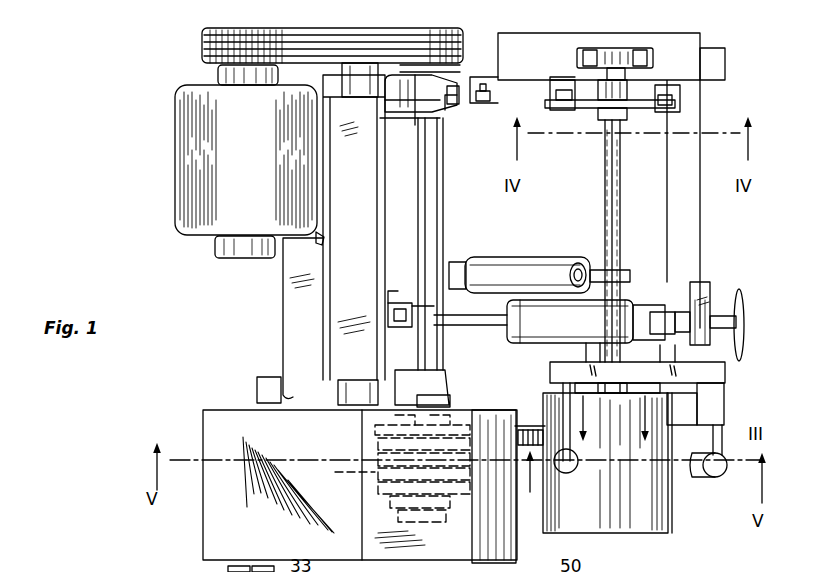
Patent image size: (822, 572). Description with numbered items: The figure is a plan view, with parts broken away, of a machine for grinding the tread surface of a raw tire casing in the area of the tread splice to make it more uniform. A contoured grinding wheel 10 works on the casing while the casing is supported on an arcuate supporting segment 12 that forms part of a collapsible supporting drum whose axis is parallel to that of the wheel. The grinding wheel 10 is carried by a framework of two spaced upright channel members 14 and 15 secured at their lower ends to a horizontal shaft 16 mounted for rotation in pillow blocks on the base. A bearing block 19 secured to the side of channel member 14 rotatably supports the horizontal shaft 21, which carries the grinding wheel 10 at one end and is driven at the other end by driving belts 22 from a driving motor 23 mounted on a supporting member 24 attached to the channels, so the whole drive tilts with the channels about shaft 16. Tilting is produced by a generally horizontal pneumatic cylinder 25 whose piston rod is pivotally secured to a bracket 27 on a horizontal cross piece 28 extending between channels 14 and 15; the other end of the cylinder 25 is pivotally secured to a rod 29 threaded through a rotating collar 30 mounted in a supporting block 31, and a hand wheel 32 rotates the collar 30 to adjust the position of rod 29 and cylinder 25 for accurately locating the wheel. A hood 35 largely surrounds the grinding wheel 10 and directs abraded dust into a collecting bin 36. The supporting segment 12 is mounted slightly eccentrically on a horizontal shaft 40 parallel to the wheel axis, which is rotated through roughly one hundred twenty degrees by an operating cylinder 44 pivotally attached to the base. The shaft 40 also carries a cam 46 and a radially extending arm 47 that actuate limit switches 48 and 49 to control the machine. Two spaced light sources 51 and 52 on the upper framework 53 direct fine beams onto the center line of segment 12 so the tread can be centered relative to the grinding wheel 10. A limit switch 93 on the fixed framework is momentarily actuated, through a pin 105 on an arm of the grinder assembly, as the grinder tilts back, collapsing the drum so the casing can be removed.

The grinding wheel 10 is at (337, 474).
The arcuate supporting segment 12 is at (665, 525).
The upright channel member 14 is at (340, 118).
The upright channel member 15 is at (320, 379).
The horizontal shaft 16 is at (408, 119).
The bearing block 19 is at (434, 99).
The horizontal shaft 21 is at (428, 218).
The driving belts 22 is at (346, 38).
The driving motor 23 is at (200, 135).
The supporting member 24 is at (316, 244).
The pneumatic cylinder 25 is at (615, 310).
The bracket 27 is at (398, 322).
The horizontal cross piece 28 is at (385, 256).
The threaded rod 29 is at (679, 308).
The rotating collar 30 is at (718, 316).
The supporting block 31 is at (704, 291).
The hand wheel 32 is at (741, 331).
The hood 35 is at (368, 534).
The collecting bin 36 is at (210, 519).
The horizontal shaft 40 is at (612, 215).
The operating cylinder 44 is at (526, 260).
The cam 46 is at (642, 105).
The radially extending arm 47 is at (590, 90).
The limit switch 48 is at (670, 95).
The limit switch 49 is at (566, 107).
The light source 51 is at (572, 472).
The light source 52 is at (704, 476).
The upper framework 53 is at (725, 372).
The limit switch 93 is at (480, 83).
The pin 105 is at (444, 103).